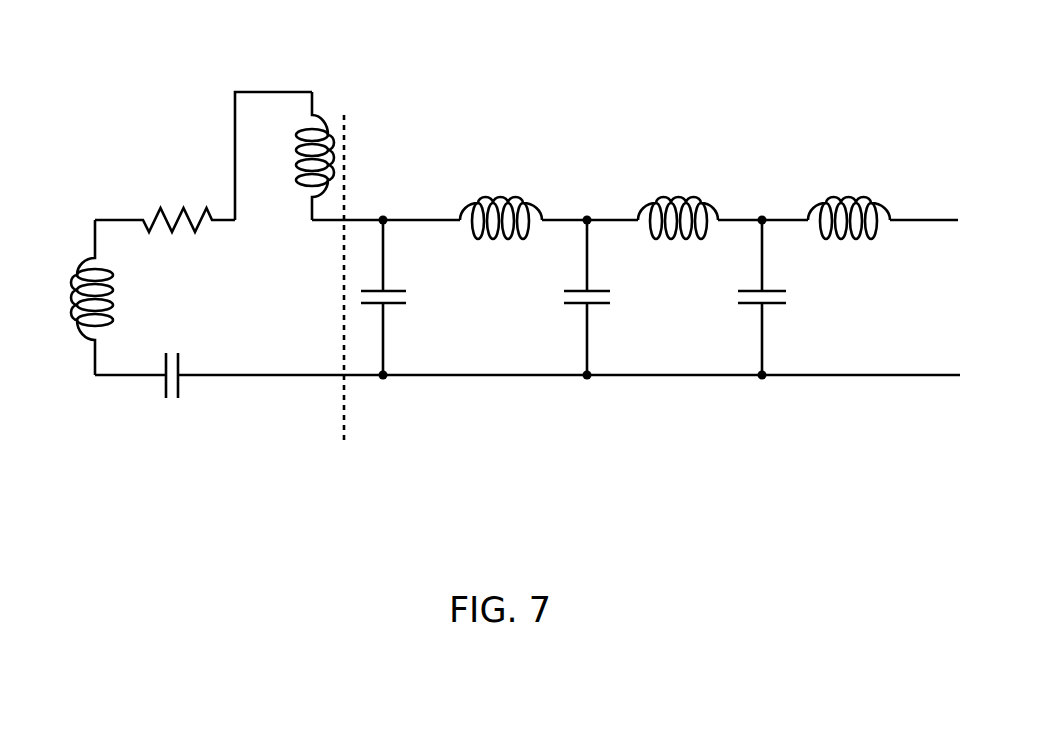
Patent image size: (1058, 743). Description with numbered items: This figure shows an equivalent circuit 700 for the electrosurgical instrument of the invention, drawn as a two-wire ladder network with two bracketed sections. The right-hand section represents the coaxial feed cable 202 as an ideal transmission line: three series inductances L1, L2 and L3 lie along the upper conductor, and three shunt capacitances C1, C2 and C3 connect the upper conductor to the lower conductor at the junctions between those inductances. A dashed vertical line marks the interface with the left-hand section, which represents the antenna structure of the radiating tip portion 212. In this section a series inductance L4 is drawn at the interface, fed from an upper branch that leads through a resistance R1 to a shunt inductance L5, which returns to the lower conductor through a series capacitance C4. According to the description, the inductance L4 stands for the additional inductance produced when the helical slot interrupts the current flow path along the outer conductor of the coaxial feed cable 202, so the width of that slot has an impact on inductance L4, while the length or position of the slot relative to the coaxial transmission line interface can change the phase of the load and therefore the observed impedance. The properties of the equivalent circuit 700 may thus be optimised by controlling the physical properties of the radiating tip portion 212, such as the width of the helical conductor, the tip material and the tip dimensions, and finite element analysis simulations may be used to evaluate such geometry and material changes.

The equivalent circuit 700 is at (500, 287).
The radiating tip portion 212 is at (72, 70).
The coaxial feed cable 202 is at (915, 70).
The inductance L1 is at (849, 200).
The inductance L2 is at (678, 200).
The inductance L3 is at (501, 200).
The inductance L4 is at (295, 156).
The inductance L5 is at (77, 297).
The capacitance C1 is at (739, 297).
The capacitance C2 is at (567, 297).
The capacitance C3 is at (406, 297).
The capacitance C4 is at (239, 395).
The resistance R1 is at (165, 203).